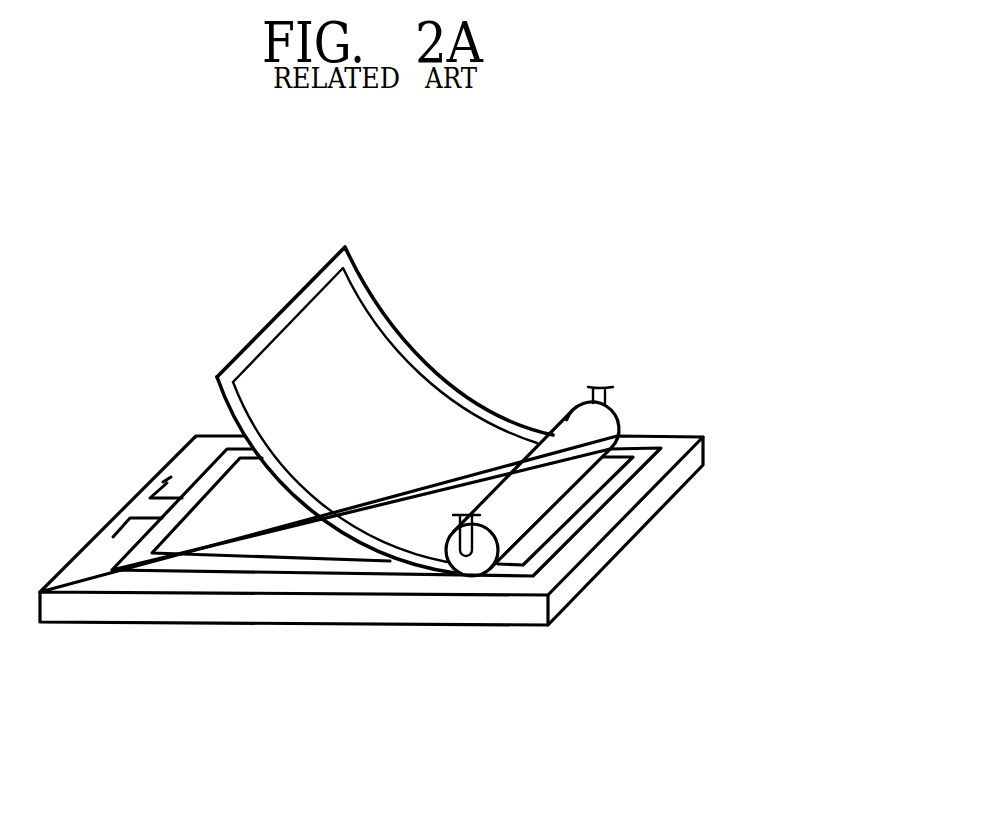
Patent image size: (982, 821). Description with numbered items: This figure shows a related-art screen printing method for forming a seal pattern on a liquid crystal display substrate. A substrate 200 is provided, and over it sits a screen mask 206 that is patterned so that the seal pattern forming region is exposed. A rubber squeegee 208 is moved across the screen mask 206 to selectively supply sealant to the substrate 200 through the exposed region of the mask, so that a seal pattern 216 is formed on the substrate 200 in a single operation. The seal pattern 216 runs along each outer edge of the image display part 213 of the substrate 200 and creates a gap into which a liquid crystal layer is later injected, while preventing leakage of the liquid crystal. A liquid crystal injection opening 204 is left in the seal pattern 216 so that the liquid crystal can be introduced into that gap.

The substrate 200 is at (383, 606).
The liquid crystal injection opening 204 is at (150, 508).
The screen mask 206 is at (400, 340).
The rubber squeegee 208 is at (562, 438).
The image display part 213 is at (240, 546).
The seal pattern 216 is at (173, 571).